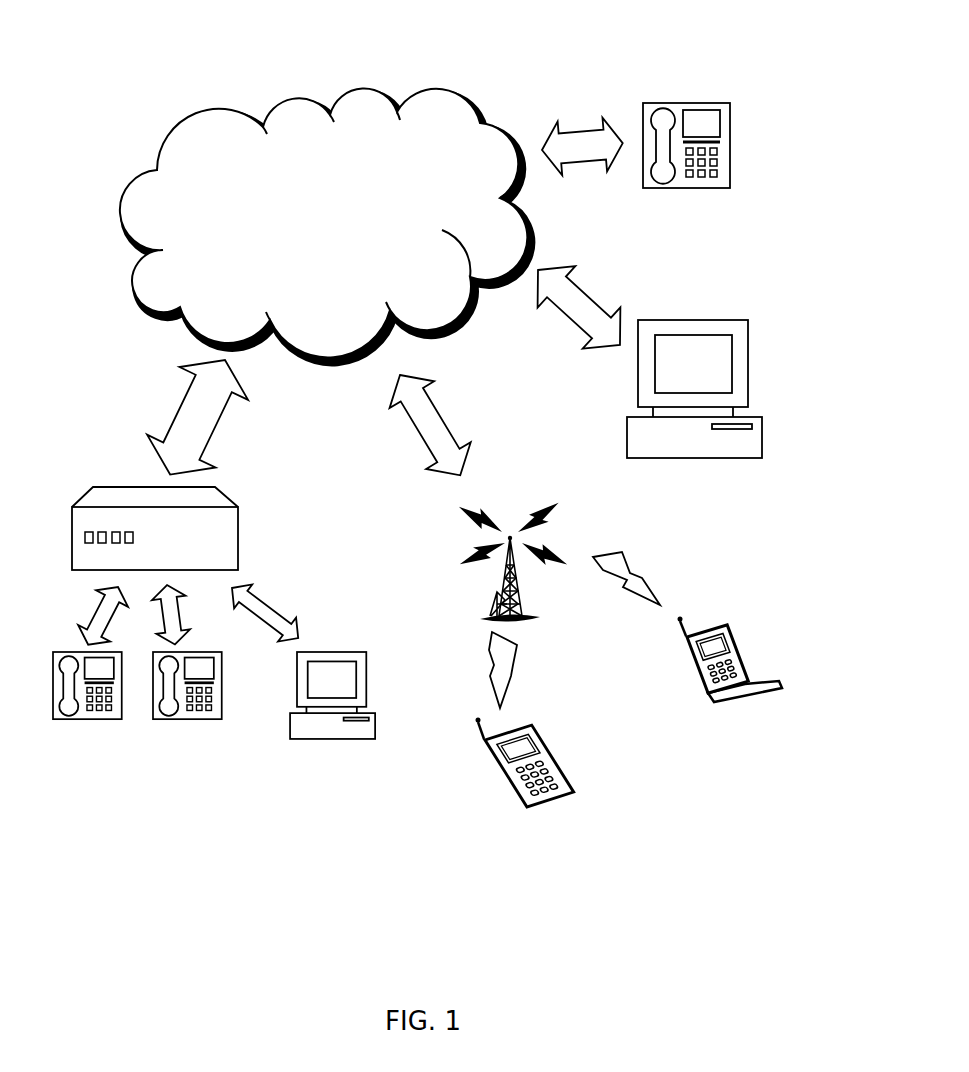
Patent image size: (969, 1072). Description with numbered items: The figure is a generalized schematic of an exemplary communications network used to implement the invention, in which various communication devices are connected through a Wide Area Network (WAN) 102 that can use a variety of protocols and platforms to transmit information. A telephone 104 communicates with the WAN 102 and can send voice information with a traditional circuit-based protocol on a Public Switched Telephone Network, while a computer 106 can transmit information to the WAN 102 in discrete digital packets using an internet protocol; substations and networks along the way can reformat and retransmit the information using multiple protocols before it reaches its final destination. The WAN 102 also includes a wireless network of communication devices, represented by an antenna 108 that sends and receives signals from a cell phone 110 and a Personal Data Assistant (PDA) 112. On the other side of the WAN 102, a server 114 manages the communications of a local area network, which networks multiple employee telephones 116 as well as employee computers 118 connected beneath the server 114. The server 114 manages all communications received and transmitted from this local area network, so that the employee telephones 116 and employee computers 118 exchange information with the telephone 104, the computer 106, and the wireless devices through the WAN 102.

The Wide Area Network (WAN) 102 is at (291, 270).
The telephone 104 is at (677, 85).
The computer 106 is at (693, 302).
The antenna 108 is at (527, 498).
The cell phone 110 is at (728, 720).
The Personal Data Assistant (PDA) 112 is at (525, 818).
The server 114 is at (169, 552).
The employee telephones 116 is at (153, 737).
The employee computers 118 is at (323, 752).